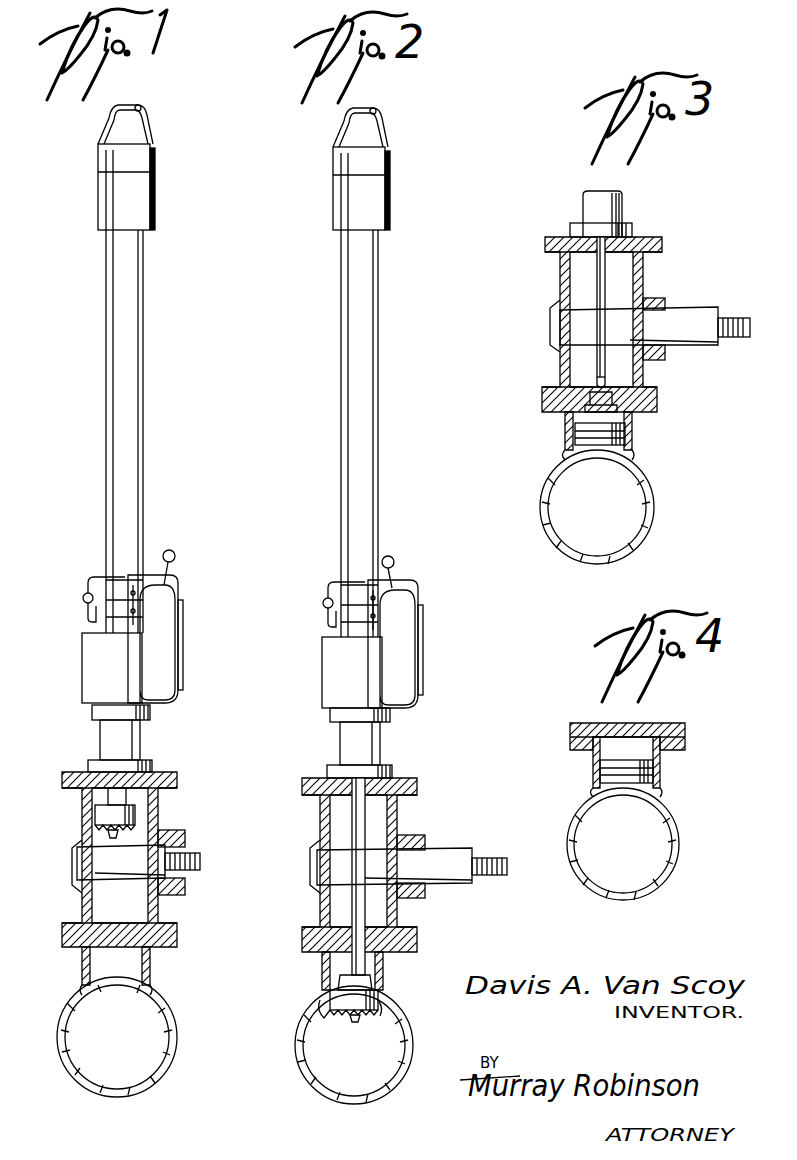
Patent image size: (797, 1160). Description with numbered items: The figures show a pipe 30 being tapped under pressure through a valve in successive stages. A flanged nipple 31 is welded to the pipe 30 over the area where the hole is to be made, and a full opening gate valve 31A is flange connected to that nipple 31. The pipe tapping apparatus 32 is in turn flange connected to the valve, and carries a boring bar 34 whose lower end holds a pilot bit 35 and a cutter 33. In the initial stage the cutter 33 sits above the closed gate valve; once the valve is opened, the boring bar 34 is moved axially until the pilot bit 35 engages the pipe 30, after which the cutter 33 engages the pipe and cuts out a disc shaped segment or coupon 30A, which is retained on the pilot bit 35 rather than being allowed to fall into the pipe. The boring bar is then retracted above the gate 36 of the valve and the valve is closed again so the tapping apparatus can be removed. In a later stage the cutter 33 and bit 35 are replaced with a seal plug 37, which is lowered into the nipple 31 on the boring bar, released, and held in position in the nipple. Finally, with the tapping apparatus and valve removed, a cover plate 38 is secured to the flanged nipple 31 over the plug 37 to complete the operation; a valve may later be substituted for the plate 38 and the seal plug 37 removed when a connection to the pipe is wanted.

In FIG. 1, the pipe 30 is at (66, 1012).
In FIG. 2, the pipe 30 is at (302, 1050).
In FIG. 3, the pipe 30 is at (655, 506).
In FIG. 4, the pipe 30 is at (680, 846).
In FIG. 2, the coupon 30A is at (328, 1020).
In FIG. 1, the flanged nipple 31 is at (82, 967).
In FIG. 2, the flanged nipple 31 is at (322, 968).
In FIG. 3, the flanged nipple 31 is at (565, 418).
In FIG. 4, the flanged nipple 31 is at (660, 760).
In FIG. 1, the full opening gate valve 31A is at (82, 897).
In FIG. 2, the full opening gate valve 31A is at (320, 898).
In FIG. 3, the full opening gate valve 31A is at (560, 352).
In FIG. 1, the pipe tapping apparatus 32 is at (78, 656).
In FIG. 2, the pipe tapping apparatus 32 is at (318, 661).
In FIG. 3, the pipe tapping apparatus 32 is at (578, 212).
In FIG. 1, the cutter 33 is at (95, 818).
In FIG. 2, the cutter 33 is at (335, 1000).
In FIG. 2, the boring bar 34 is at (352, 826).
In FIG. 3, the boring bar 34 is at (597, 285).
In FIG. 1, the pilot bit 35 is at (110, 836).
In FIG. 2, the pilot bit 35 is at (355, 1022).
In FIG. 1, the gate 36 is at (88, 862).
In FIG. 2, the gate 36 is at (447, 860).
In FIG. 3, the gate 36 is at (693, 330).
In FIG. 3, the seal plug 37 is at (598, 446).
In FIG. 4, the seal plug 37 is at (615, 784).
In FIG. 4, the cover plate 38 is at (685, 730).